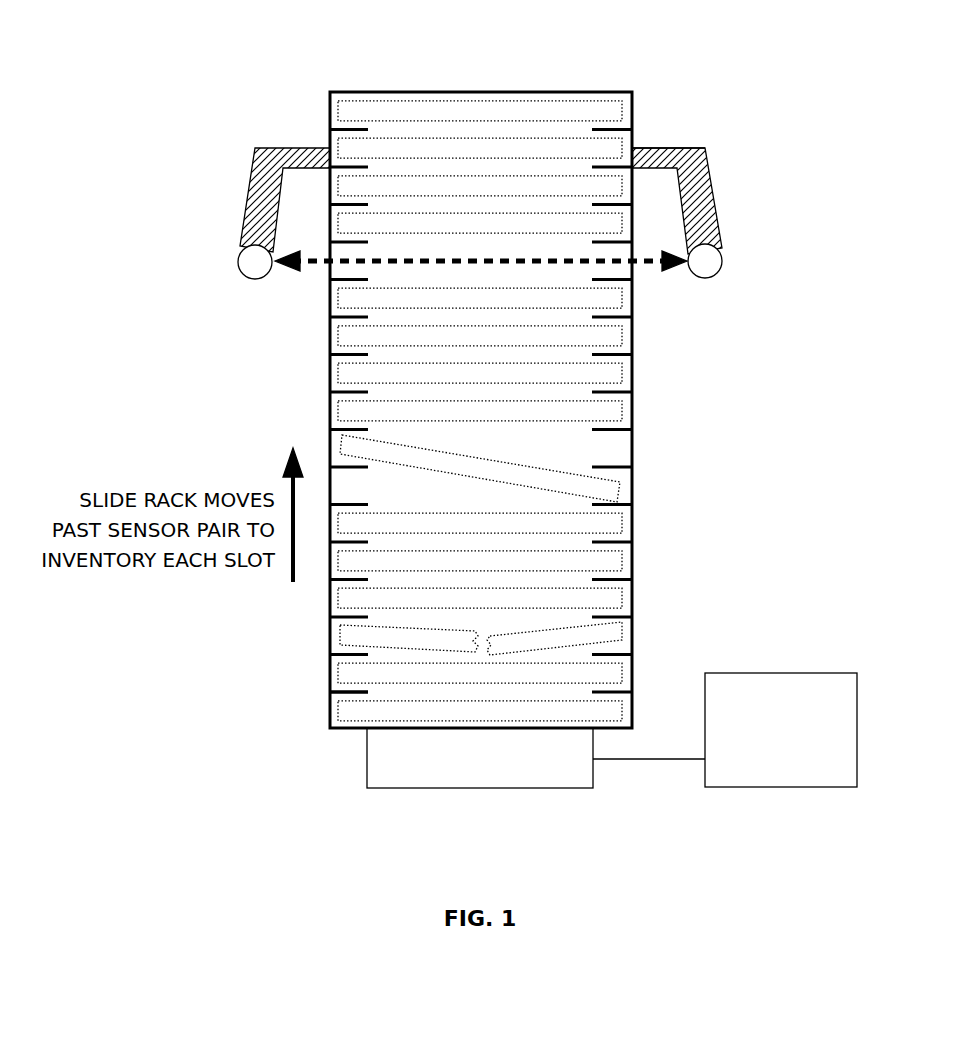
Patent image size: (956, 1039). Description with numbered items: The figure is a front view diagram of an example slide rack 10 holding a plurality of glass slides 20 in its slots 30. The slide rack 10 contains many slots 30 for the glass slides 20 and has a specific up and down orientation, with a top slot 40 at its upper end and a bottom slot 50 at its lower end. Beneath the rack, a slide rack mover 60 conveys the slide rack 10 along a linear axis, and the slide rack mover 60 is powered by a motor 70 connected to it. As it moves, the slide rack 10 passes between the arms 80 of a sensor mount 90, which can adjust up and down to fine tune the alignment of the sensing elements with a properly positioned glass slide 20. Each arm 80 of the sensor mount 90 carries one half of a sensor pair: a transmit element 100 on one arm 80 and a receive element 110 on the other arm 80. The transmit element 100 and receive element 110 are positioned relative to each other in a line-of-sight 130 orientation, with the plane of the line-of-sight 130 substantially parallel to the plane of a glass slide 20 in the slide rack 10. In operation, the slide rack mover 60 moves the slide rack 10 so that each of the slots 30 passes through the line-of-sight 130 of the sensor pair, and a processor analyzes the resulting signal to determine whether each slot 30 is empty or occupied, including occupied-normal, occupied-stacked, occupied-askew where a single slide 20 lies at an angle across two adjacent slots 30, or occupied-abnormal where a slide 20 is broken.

The slide rack 10 is at (540, 71).
The glass slides 20 is at (623, 335).
The slots 30 is at (316, 317).
The top slot 40 is at (316, 93).
The bottom slot 50 is at (316, 692).
The slide rack mover 60 is at (540, 789).
The motor 70 is at (781, 730).
The arms 80 is at (250, 168).
The sensor mount 90 is at (680, 138).
The transmit element 100 is at (240, 254).
The receive element 110 is at (726, 257).
The line-of-sight 130 is at (633, 262).